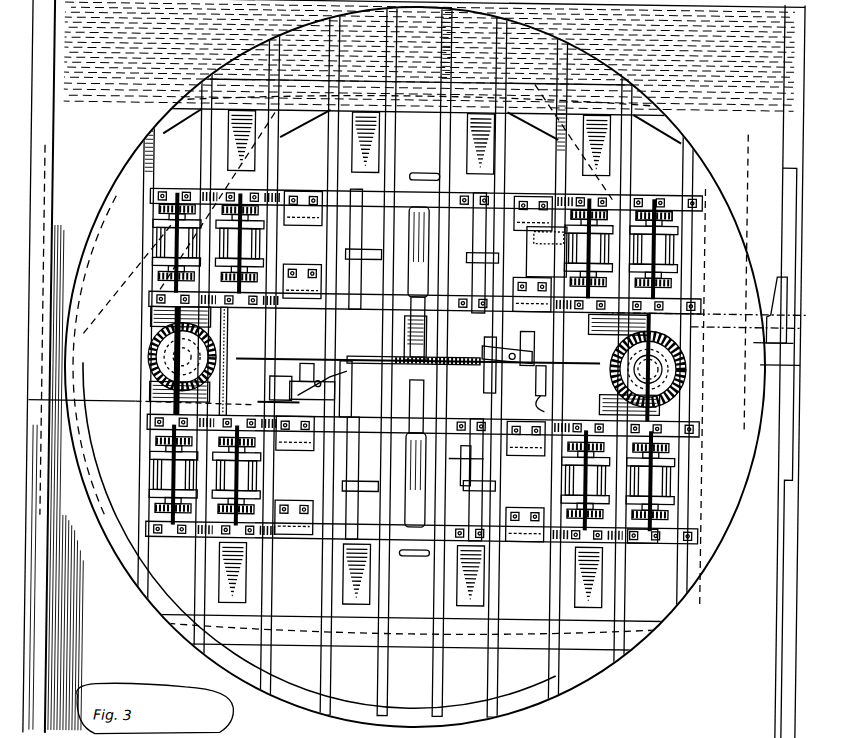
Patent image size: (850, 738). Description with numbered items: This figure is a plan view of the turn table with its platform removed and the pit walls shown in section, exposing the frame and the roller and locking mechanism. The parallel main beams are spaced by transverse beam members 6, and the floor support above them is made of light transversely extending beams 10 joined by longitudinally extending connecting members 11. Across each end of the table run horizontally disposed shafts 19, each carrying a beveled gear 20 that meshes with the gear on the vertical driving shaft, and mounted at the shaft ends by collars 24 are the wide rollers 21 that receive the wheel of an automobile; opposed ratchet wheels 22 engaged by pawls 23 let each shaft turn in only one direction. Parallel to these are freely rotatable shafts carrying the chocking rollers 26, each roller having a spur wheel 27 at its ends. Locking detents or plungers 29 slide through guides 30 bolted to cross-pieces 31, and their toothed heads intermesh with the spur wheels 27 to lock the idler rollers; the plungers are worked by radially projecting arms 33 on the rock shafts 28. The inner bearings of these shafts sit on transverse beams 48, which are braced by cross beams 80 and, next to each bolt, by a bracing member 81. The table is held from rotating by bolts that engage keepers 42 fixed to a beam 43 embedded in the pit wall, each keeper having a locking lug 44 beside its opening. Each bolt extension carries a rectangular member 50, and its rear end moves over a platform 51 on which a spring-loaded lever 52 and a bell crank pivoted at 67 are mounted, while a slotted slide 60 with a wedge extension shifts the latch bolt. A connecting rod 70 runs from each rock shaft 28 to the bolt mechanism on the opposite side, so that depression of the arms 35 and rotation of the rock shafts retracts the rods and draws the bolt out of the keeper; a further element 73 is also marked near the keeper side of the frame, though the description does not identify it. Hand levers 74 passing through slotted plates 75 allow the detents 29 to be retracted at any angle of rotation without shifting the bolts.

The transverse beam members 6 is at (340, 100).
The transversely extending beams 10 is at (419, 84).
The longitudinally extending connecting members 11 is at (453, 545).
The horizontally disposed shafts 19 is at (704, 300).
The beveled gear 20 is at (637, 388).
The rollers 21 is at (652, 365).
The ratchet wheels 22 is at (672, 228).
The pawls 23 is at (640, 540).
The collars 24 is at (695, 456).
The chocking rollers 26 is at (381, 361).
The spur wheel 27 is at (608, 210).
The rock shafts 28 is at (355, 334).
The locking detents or plungers 29 is at (560, 482).
The guides 30 is at (521, 205).
The cross-pieces 31 is at (546, 252).
The radially projecting arms 33 is at (504, 470).
The arms 35 is at (394, 356).
The keepers 42 is at (780, 360).
The beam 43 is at (790, 345).
The locking lug 44 is at (737, 284).
The transverse beams 48 is at (468, 485).
The member 50 is at (526, 316).
The platform 51 is at (340, 366).
The lever 52 is at (520, 366).
The slide 60 is at (276, 386).
The pivot 67 is at (549, 389).
The connecting rod 70 is at (372, 482).
The central pipe 73 is at (560, 329).
The hand levers 74 is at (421, 172).
The slotted plates 75 is at (408, 556).
The cross beams 80 is at (128, 530).
The bracing member 81 is at (96, 500).